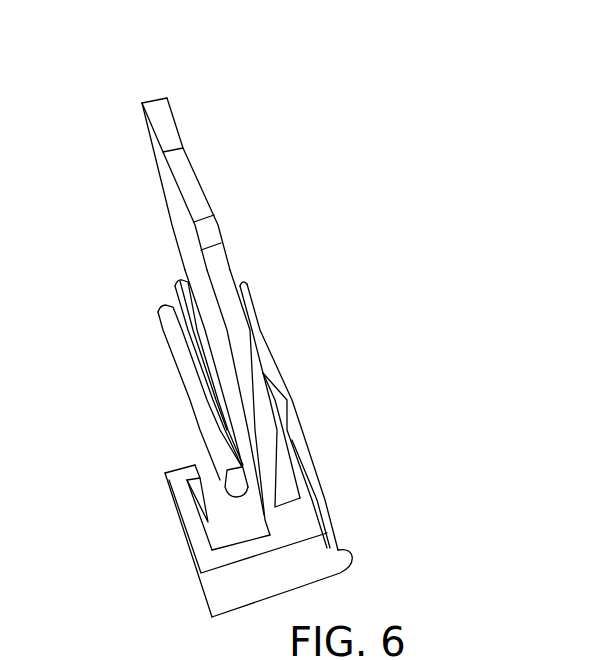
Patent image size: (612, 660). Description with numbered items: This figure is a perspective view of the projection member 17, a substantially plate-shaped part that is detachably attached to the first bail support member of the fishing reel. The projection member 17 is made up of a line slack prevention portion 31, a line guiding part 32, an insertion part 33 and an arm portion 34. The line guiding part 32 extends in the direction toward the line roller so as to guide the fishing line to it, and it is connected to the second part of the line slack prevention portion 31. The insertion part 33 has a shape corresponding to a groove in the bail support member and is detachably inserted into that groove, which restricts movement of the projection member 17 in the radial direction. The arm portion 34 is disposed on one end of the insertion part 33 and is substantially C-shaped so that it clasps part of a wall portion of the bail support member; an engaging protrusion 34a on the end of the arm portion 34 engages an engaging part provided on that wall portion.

The projection member 17 is at (290, 88).
The line slack prevention portion 31 is at (204, 178).
The line guiding part 32 is at (254, 377).
The insertion part 33 is at (308, 471).
The arm portion 34 is at (178, 554).
The engaging protrusion 34a is at (197, 467).